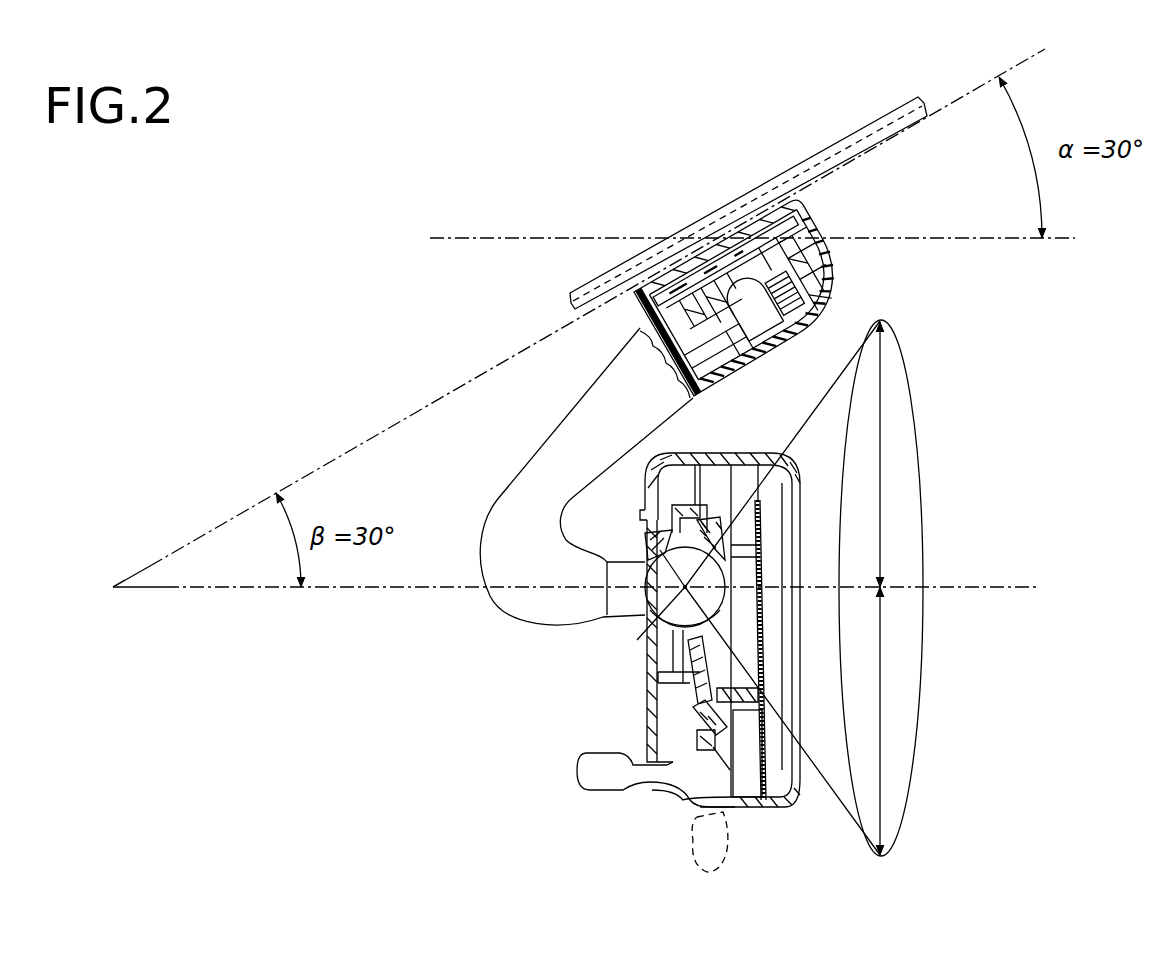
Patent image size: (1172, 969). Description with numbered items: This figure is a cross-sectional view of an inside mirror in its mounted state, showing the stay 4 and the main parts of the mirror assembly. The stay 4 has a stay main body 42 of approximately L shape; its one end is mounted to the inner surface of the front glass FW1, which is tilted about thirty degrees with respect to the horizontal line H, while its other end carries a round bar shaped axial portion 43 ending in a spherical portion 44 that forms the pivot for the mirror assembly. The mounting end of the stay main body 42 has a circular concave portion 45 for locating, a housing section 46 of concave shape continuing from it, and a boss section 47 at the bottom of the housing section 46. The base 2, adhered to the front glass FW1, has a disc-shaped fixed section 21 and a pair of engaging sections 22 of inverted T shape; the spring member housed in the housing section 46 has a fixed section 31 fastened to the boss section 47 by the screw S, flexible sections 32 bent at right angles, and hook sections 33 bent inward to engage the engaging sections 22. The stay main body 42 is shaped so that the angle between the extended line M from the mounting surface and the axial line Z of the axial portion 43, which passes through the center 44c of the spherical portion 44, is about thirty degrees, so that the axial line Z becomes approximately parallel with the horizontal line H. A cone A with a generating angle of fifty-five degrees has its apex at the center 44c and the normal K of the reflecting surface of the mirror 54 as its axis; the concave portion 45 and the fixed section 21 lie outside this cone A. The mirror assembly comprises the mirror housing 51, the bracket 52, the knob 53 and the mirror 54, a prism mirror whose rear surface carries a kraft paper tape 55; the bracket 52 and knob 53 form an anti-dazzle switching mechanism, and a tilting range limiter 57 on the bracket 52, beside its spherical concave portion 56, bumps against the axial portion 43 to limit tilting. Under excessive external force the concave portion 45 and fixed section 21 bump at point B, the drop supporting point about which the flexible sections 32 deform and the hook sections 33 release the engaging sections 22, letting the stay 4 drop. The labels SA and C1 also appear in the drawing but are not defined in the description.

The base 2 is at (775, 196).
The stay 4 is at (510, 456).
The fixed section 21 is at (660, 263).
The engaging sections 22 is at (688, 262).
The fixed section 31 is at (740, 378).
The flexible sections 32 is at (695, 382).
The hook sections 33 is at (726, 237).
The stay main body 42 is at (827, 298).
The axial portion 43 is at (622, 562).
The spherical portion 44 is at (640, 553).
The center of the spherical portion 44c is at (658, 533).
The circular concave portion 45 is at (810, 222).
The housing section 46 is at (830, 278).
The boss section 47 is at (745, 355).
The mirror housing 51 is at (782, 455).
The bracket 52 is at (693, 701).
The knob 53 is at (683, 850).
The mirror 54 is at (650, 690).
The tape 55 is at (755, 745).
The spherical concave portion 56 is at (673, 668).
The tilting range limiter 57 is at (650, 632).
The front glass FW1 is at (820, 147).
The cone A is at (916, 766).
The point B is at (645, 281).
The screw S is at (768, 338).
The optical axis SA is at (693, 200).
The horizontal line H is at (478, 232).
The normal K is at (986, 587).
The extended line M is at (220, 525).
The axial line Z is at (216, 590).
The windshield inclination line C1 is at (980, 95).